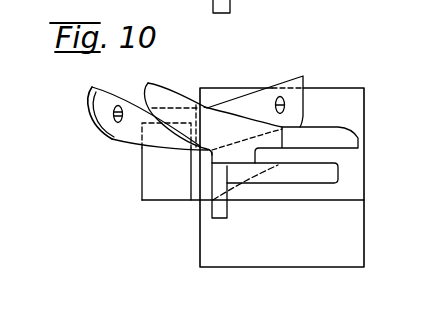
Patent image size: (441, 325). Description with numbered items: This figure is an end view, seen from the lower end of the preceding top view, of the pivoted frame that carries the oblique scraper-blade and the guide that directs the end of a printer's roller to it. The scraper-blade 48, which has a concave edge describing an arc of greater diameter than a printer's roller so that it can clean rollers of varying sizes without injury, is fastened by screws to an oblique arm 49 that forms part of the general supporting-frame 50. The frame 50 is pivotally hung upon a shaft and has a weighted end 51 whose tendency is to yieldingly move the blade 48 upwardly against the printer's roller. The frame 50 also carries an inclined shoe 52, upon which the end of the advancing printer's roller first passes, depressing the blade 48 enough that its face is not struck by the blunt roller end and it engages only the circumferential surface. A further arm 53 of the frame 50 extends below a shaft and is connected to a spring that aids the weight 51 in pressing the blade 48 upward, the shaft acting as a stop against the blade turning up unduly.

The oblique scraper-blade 48 is at (128, 130).
The oblique arm 49 is at (90, 116).
The supporting-frame 50 is at (328, 173).
The weighted end 51 is at (253, 177).
The inclined shoe 52 is at (179, 93).
The arm 53 is at (217, 218).